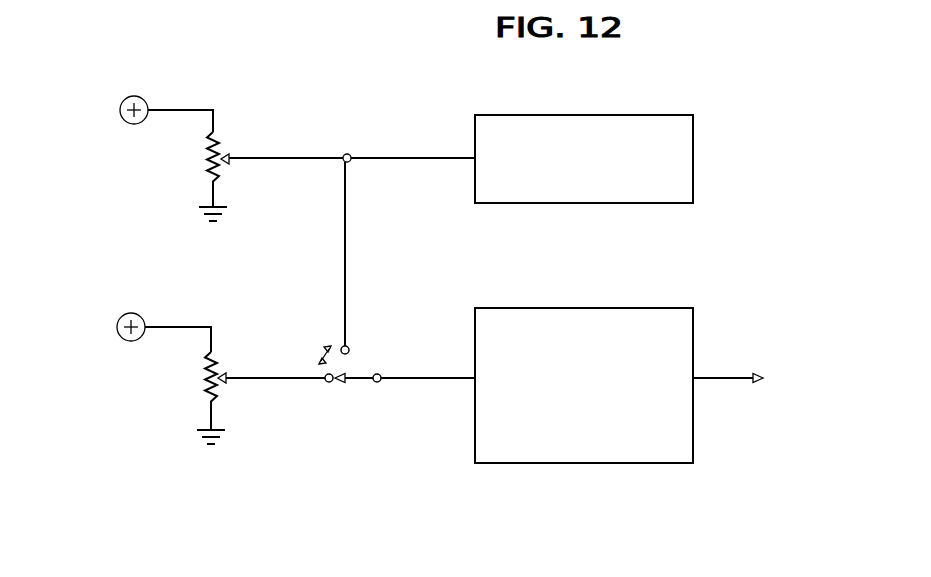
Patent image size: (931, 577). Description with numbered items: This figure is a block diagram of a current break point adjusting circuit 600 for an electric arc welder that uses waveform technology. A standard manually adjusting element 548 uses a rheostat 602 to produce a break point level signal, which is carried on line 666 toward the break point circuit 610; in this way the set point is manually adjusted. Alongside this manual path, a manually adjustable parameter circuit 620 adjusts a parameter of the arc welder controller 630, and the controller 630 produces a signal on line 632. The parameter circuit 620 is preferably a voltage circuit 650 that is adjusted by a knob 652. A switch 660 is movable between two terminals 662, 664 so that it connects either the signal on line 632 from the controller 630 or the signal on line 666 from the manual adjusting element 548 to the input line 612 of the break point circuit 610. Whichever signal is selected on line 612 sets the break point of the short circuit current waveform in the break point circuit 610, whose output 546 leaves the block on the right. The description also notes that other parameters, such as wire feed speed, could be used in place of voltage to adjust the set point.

The current break point adjusting circuit 600 is at (712, 113).
The arc welder controller 630 is at (623, 115).
The line 632 is at (415, 157).
The voltage circuit 650 is at (205, 155).
The manually adjustable parameter circuit 620 is at (226, 153).
The knob 652 is at (231, 165).
The rheostat 602 is at (207, 373).
The manually adjusting element 548 is at (237, 385).
The terminal 664 is at (331, 390).
The line 666 is at (303, 378).
The terminal 662 is at (337, 342).
The switch 660 is at (363, 367).
The line 612 is at (418, 382).
The break point circuit 610 is at (622, 308).
The output signal 546 is at (723, 383).